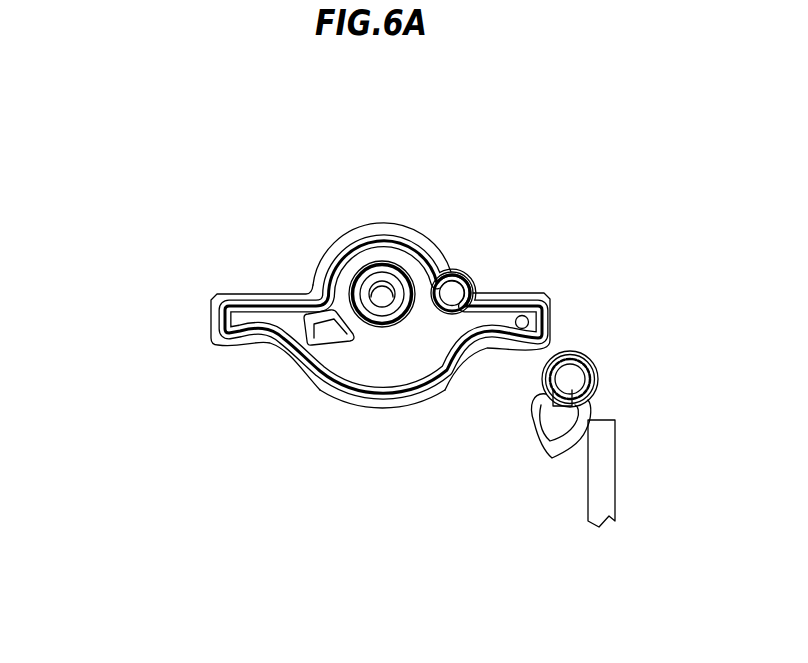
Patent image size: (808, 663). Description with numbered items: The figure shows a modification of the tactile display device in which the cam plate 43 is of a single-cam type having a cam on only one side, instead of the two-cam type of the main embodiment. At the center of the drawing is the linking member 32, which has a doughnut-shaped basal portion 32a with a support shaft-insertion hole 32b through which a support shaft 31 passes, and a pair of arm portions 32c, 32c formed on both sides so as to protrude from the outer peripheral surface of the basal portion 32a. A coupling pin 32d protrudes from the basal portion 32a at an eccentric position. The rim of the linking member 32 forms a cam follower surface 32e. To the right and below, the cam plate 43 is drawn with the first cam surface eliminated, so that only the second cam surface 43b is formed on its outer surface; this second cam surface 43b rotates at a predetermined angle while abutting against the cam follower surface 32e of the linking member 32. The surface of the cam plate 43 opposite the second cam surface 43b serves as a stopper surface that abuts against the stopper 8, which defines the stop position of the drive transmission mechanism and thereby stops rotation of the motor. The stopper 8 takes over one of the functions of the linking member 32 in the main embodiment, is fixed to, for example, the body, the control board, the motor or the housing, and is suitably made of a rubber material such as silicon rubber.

The shaft 31 is at (377, 295).
The linking member 32 is at (360, 332).
The basal portion 32a is at (363, 378).
The support shaft-insertion hole 32b is at (402, 275).
The arm portion 32c is at (263, 302).
The coupling pin 32d is at (458, 293).
The cam follower surface 32e is at (517, 346).
The cam plate 43 is at (515, 430).
The second cam surface 43b is at (421, 452).
The stopper 8 is at (607, 474).